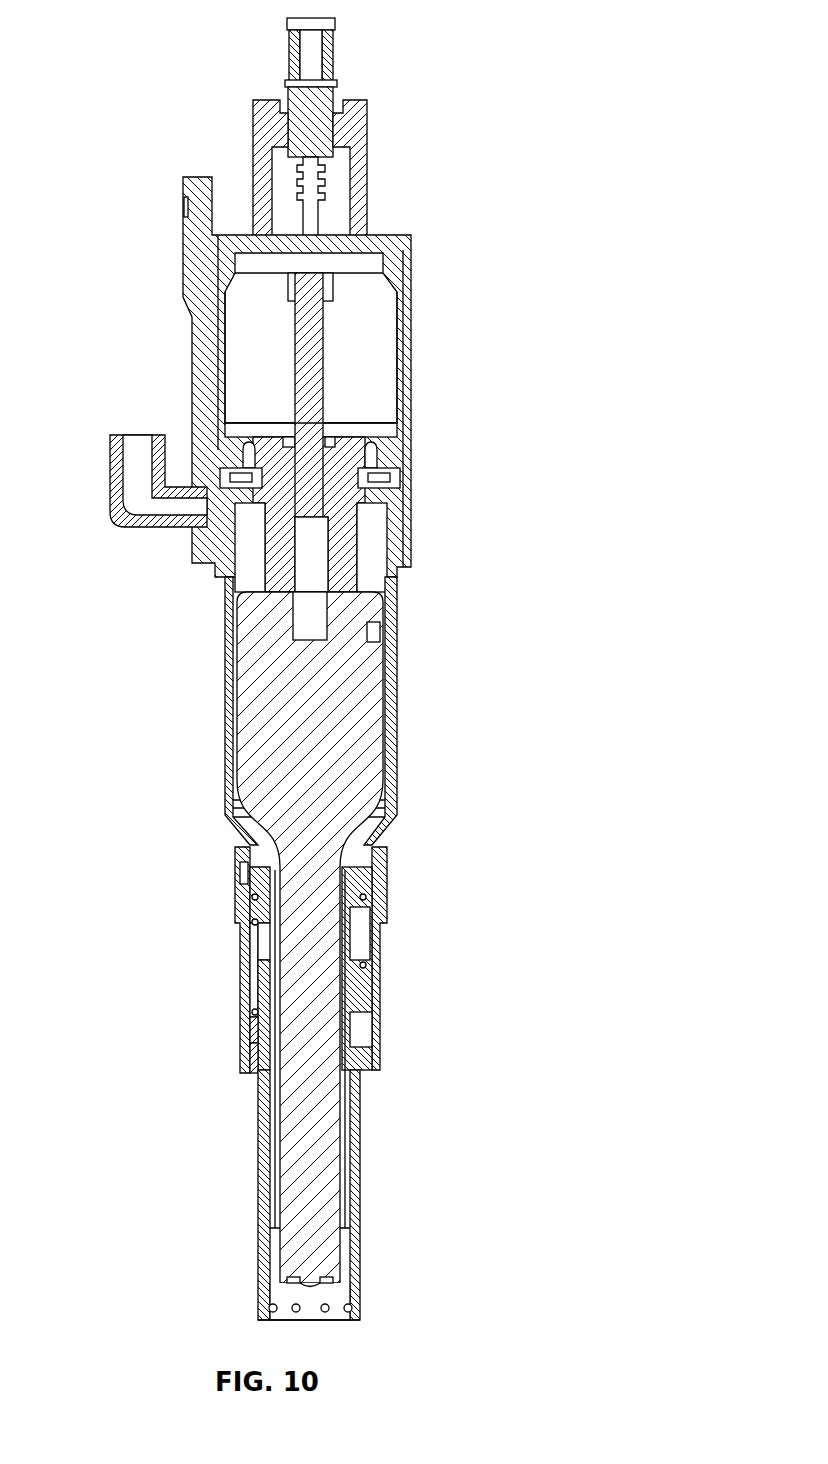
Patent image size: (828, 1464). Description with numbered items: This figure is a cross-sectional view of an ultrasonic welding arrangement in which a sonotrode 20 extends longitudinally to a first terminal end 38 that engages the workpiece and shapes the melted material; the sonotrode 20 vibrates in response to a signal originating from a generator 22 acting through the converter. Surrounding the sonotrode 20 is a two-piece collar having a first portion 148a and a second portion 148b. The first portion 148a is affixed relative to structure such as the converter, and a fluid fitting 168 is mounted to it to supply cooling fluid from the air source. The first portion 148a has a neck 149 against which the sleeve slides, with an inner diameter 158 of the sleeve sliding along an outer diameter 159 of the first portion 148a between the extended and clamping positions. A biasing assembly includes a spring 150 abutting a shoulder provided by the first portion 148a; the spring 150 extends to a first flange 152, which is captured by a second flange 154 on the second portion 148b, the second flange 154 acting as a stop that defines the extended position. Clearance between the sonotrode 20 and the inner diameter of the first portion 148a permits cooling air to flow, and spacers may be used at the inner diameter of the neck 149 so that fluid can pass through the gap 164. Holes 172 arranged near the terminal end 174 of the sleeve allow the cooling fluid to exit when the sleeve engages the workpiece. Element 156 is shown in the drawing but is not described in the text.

The sonotrode 20 is at (360, 673).
The generator 22 is at (377, 328).
The first terminal end 38 is at (318, 1288).
The first portion 148a is at (387, 798).
The second portion 148b is at (380, 900).
The neck 149 is at (345, 1187).
The spring 150 is at (255, 924).
The first flange 152 is at (258, 1030).
The second flange 154 is at (253, 1058).
The bushing 156 is at (260, 990).
The inner diameter 158 is at (272, 1190).
The outer diameter 159 is at (265, 1228).
The gap 164 is at (349, 1149).
The fluid fitting 168 is at (128, 518).
The holes 172 is at (300, 1312).
The terminal end 174 is at (298, 1323).